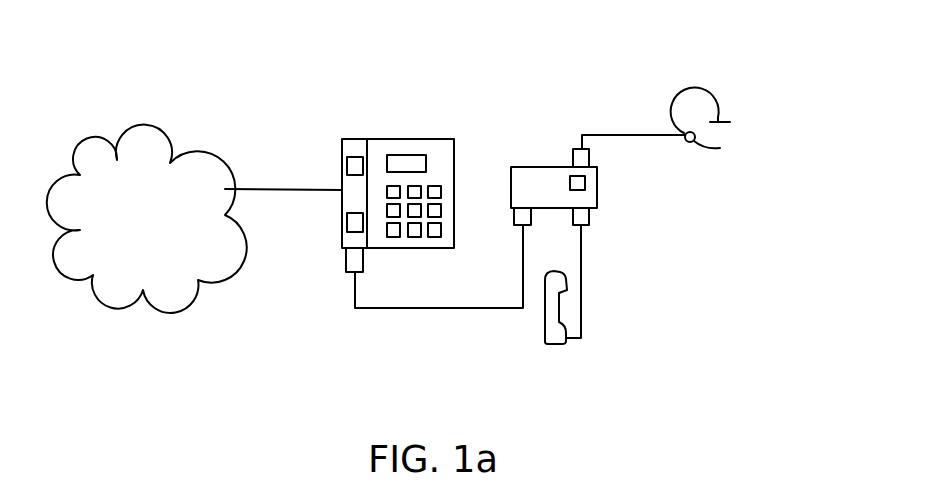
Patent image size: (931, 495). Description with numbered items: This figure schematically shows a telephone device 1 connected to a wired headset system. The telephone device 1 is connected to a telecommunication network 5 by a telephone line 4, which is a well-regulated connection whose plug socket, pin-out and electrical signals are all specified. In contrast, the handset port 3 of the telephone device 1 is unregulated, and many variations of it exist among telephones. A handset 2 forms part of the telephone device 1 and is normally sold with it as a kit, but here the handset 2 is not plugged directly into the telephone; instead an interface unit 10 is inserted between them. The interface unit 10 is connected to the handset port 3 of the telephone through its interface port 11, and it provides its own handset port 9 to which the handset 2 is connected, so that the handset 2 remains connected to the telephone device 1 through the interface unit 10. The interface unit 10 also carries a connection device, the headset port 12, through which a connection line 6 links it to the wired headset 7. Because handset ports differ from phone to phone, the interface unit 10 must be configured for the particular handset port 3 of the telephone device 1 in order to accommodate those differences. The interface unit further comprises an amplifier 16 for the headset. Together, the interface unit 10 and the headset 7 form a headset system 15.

The telephone device 1 is at (372, 138).
The handset 2 is at (557, 348).
The handset port 3 is at (346, 264).
The telephone line 4 is at (278, 193).
The telecommunication network 5 is at (195, 134).
The connection line 6 is at (667, 137).
The headset 7 is at (696, 90).
The handset port 9 is at (573, 224).
The interface unit 10 is at (517, 165).
The interface port 11 is at (513, 222).
The headset port 12 is at (590, 161).
The headset system 15 is at (593, 102).
The amplifier 16 is at (586, 185).